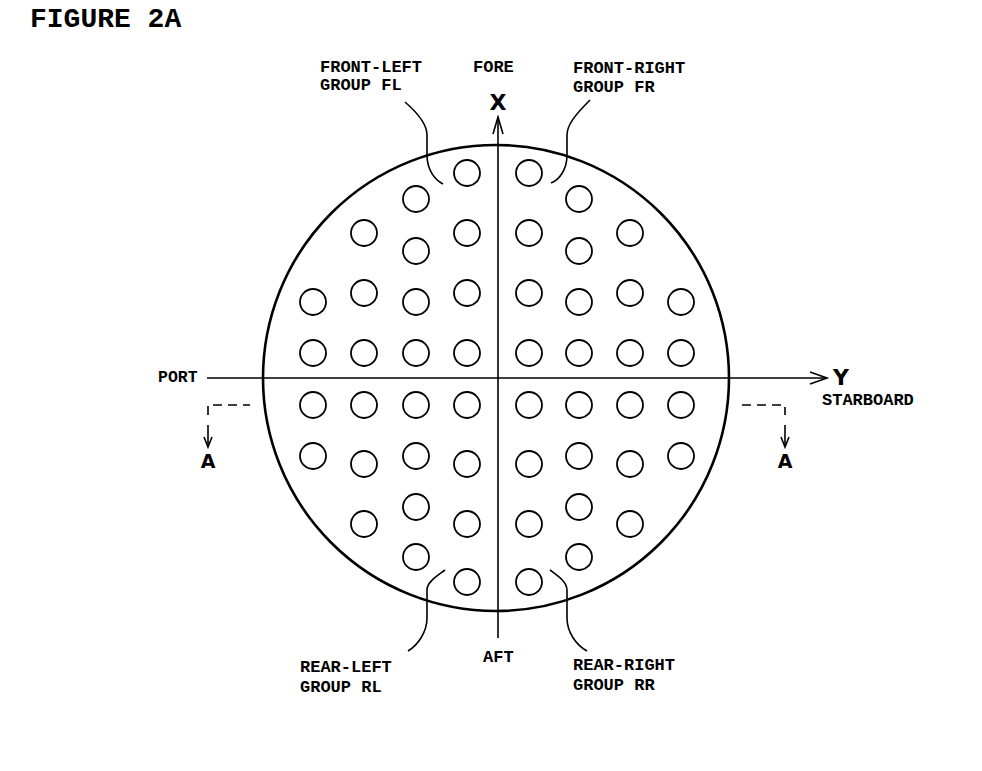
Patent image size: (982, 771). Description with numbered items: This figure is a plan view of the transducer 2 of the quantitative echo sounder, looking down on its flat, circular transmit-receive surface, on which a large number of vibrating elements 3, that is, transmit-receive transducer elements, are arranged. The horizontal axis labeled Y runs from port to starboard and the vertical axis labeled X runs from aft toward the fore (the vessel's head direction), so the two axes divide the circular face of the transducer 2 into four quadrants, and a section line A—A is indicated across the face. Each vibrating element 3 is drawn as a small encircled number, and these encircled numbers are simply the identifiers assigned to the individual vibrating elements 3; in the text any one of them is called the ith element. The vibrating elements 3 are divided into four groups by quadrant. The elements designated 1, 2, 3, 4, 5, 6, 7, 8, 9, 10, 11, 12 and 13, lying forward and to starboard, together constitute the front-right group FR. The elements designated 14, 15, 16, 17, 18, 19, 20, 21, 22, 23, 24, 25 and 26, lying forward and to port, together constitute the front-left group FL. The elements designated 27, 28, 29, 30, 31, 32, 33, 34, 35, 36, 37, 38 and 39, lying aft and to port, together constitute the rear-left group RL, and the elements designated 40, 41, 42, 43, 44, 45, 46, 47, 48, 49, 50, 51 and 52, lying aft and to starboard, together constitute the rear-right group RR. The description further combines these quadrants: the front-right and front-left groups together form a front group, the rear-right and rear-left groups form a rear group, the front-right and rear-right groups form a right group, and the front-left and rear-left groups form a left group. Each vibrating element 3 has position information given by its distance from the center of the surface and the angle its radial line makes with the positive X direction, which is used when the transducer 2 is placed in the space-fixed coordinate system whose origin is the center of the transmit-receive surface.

The transducer 2 is at (729, 334).
The vibrating element 3 is at (363, 220).
The vibrating element number one 1 is at (529, 353).
The vibrating element number four 4 is at (529, 293).
The vibrating element number five 5 is at (630, 353).
The vibrating element number six 6 is at (630, 293).
The vibrating element number seven 7 is at (579, 251).
The vibrating element number eight 8 is at (529, 233).
The vibrating element number nine 9 is at (681, 353).
The vibrating element number ten 10 is at (681, 302).
The vibrating element number eleven 11 is at (630, 233).
The vibrating element number twelve 12 is at (579, 199).
The vibrating element number thirteen 13 is at (529, 173).
The vibrating element number fourteen 14 is at (467, 353).
The vibrating element number fifteen 15 is at (467, 293).
The vibrating element number sixteen 16 is at (416, 302).
The vibrating element number seventeen 17 is at (416, 353).
The vibrating element number eighteen 18 is at (467, 233).
The vibrating element number nineteen 19 is at (416, 251).
The vibrating element number twenty 20 is at (364, 293).
The vibrating element number twenty-one 21 is at (364, 353).
The vibrating element number twenty-two 22 is at (467, 173).
The vibrating element number twenty-three 23 is at (416, 199).
The vibrating element number twenty-four 24 is at (364, 233).
The vibrating element number twenty-five 25 is at (313, 302).
The vibrating element number twenty-six 26 is at (313, 353).
The vibrating element number twenty-seven 27 is at (467, 405).
The vibrating element number twenty-eight 28 is at (416, 405).
The vibrating element number twenty-nine 29 is at (416, 456).
The vibrating element number thirty 30 is at (467, 464).
The vibrating element number thirty-one 31 is at (364, 405).
The vibrating element number thirty-two 32 is at (364, 464).
The vibrating element number thirty-three 33 is at (416, 507).
The vibrating element number thirty-four 34 is at (467, 524).
The vibrating element number thirty-five 35 is at (313, 405).
The vibrating element number thirty-six 36 is at (313, 456).
The vibrating element number thirty-seven 37 is at (364, 524).
The vibrating element number thirty-eight 38 is at (416, 557).
The vibrating element number thirty-nine 39 is at (467, 582).
The vibrating element number forty 40 is at (529, 405).
The vibrating element number forty-one 41 is at (529, 464).
The vibrating element number forty-two 42 is at (579, 456).
The vibrating element number forty-three 43 is at (579, 405).
The vibrating element number forty-four 44 is at (529, 524).
The vibrating element number forty-five 45 is at (579, 507).
The vibrating element number forty-six 46 is at (630, 464).
The vibrating element number forty-seven 47 is at (630, 405).
The vibrating element number forty-eight 48 is at (529, 582).
The vibrating element number forty-nine 49 is at (579, 557).
The vibrating element number fifty 50 is at (630, 524).
The vibrating element number fifty-one 51 is at (681, 456).
The vibrating element number fifty-two 52 is at (681, 405).